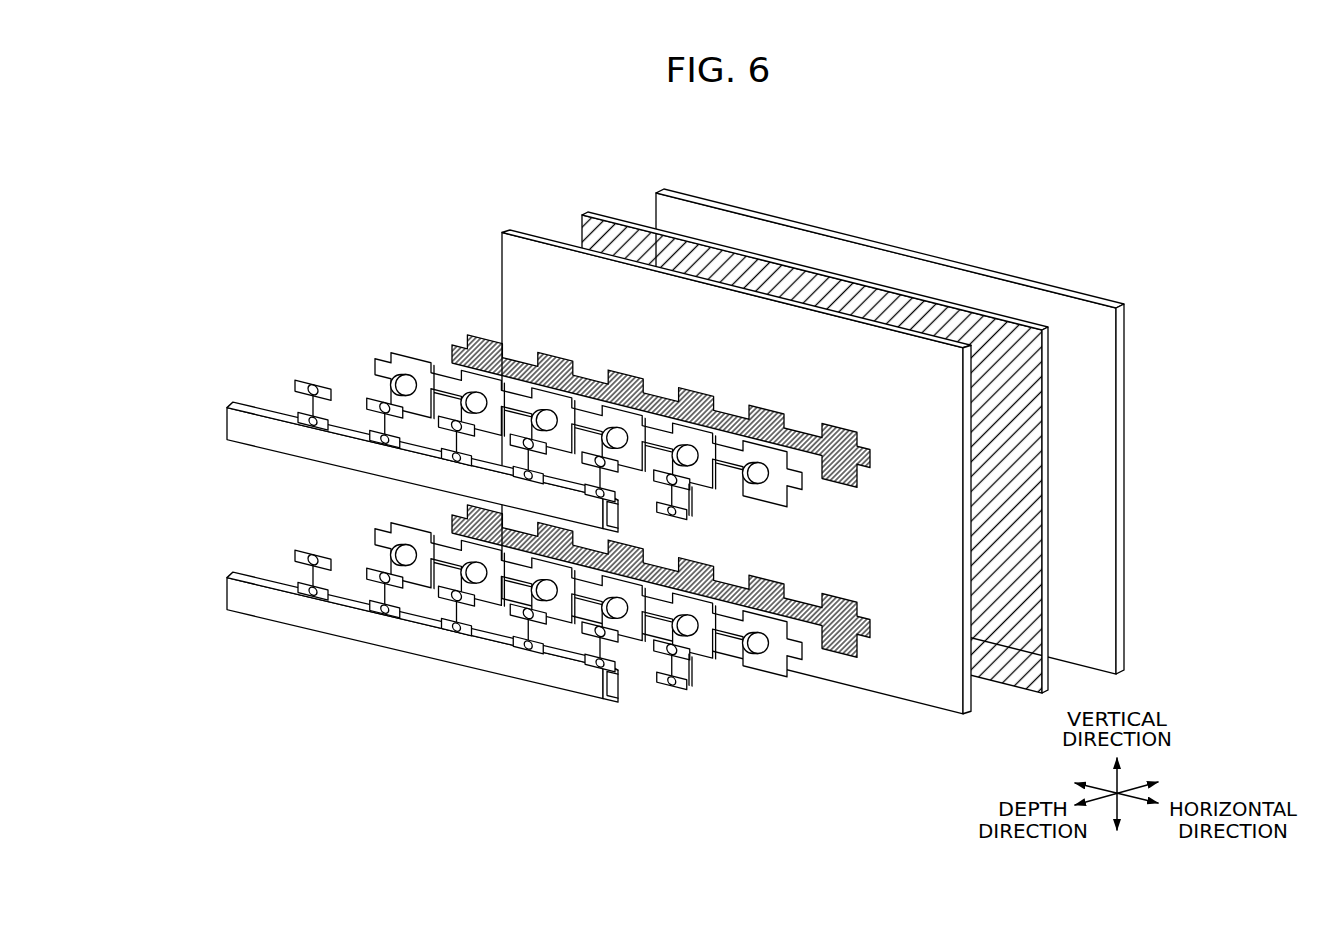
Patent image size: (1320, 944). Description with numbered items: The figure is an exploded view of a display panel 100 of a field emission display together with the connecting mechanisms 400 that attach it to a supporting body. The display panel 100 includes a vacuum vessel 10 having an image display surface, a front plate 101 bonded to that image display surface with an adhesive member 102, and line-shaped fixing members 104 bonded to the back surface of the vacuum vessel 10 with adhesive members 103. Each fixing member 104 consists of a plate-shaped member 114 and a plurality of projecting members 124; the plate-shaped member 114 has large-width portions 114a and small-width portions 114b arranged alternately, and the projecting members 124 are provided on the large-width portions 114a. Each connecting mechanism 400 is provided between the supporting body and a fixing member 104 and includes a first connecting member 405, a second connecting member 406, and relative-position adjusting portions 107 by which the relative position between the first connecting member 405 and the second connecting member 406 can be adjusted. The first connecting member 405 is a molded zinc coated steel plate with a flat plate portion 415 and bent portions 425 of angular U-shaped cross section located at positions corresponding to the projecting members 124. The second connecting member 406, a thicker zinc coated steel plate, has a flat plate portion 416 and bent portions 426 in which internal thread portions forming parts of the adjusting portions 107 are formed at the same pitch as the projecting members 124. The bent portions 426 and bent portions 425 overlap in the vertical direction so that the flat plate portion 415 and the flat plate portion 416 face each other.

The display panel 100 is at (761, 405).
The front plate 101 is at (683, 200).
The adhesive member 102 is at (620, 230).
The vacuum vessel 10 is at (736, 426).
The adhesive member 103 is at (480, 336).
The fixing member 104 is at (650, 461).
The plate-shaped member 114 is at (650, 447).
The large-width portion 114a is at (767, 458).
The small-width portion 114b is at (732, 466).
The projecting member 124 is at (748, 652).
The connecting mechanism 400 is at (417, 497).
The first connecting member 405 is at (429, 497).
The second connecting member 406 is at (393, 520).
The relative-position adjusting portion 107 is at (297, 388).
The flat plate portion 415 is at (317, 582).
The bent portion 425 is at (310, 557).
The flat plate portion 416 is at (232, 598).
The bent portion 426 is at (267, 587).